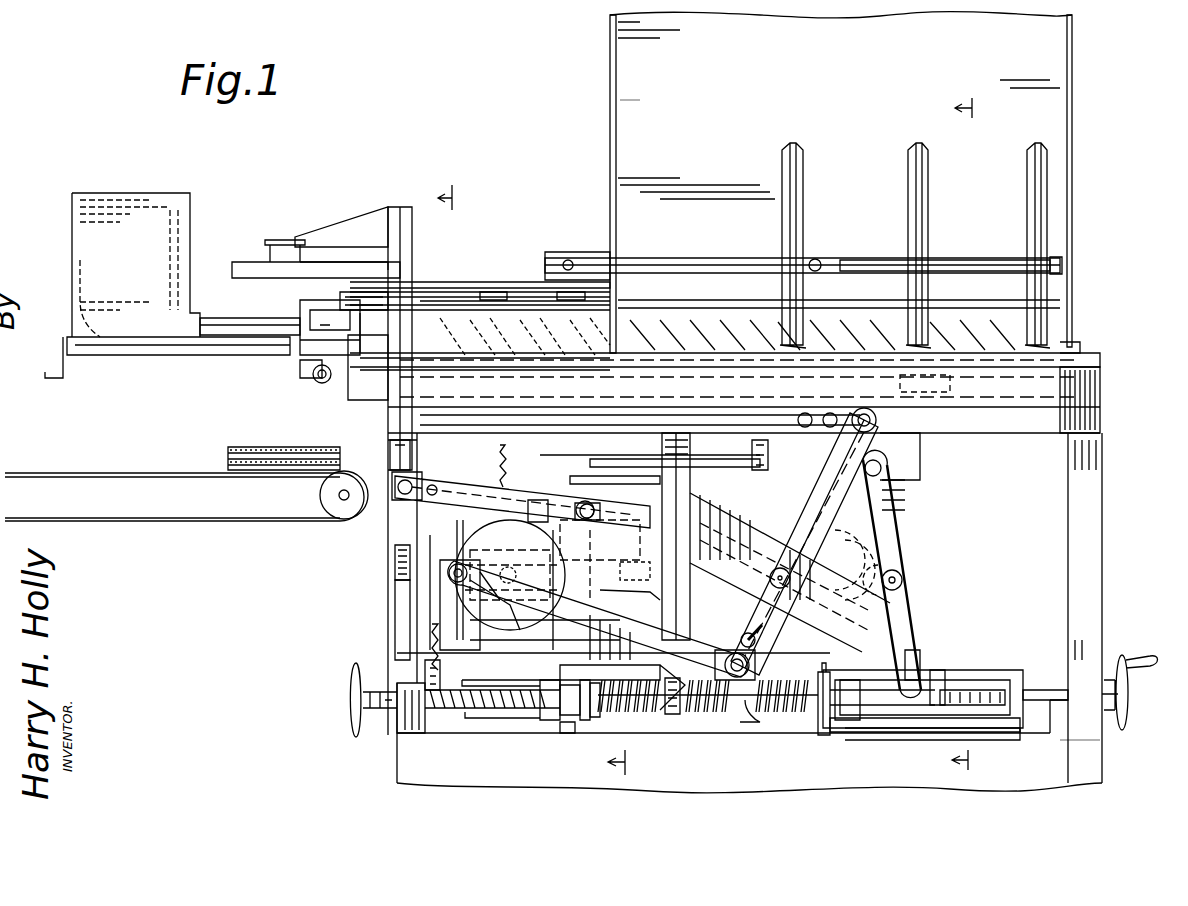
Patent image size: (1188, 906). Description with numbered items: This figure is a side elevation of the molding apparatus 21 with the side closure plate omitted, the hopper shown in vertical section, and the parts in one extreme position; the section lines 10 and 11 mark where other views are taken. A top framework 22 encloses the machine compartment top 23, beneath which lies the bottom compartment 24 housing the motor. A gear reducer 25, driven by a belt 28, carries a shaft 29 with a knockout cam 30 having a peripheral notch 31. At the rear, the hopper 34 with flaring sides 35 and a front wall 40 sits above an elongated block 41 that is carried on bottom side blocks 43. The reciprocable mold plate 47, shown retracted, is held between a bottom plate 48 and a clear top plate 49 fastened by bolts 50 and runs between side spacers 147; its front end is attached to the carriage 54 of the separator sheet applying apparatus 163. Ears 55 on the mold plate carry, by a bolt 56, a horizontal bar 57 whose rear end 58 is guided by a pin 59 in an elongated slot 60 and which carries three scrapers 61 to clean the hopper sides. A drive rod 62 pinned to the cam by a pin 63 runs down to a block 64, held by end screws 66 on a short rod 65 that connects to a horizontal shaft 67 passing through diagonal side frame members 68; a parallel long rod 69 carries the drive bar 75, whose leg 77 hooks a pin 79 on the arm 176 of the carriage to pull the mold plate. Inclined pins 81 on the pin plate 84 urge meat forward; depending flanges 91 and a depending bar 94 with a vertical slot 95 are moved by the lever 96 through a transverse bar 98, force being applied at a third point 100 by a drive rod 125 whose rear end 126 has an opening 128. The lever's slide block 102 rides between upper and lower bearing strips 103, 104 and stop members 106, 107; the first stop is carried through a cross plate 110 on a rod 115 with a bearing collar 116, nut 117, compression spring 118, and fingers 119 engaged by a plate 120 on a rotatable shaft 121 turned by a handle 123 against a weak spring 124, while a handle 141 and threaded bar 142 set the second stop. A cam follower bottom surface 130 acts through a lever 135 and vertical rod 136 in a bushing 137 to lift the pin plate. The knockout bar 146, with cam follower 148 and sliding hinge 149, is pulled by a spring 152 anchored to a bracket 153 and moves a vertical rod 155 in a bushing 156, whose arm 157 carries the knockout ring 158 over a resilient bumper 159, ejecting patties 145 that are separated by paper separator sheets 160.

The section line 10- 10 is at (945, 432).
The section line 11- 11 is at (531, 470).
The molding apparatus 21 is at (760, 406).
The top framework 22 is at (1090, 510).
The machine compartment top 23 is at (1040, 639).
The bottom compartment 24 is at (732, 728).
The gear reducer 25 is at (530, 605).
The belt 28 is at (600, 640).
The shaft 29 is at (493, 555).
The knockout cam 30 is at (585, 545).
The notch 31 is at (528, 598).
The hopper 34 is at (1078, 128).
The hopper sides 35 is at (677, 85).
The front wall 40 is at (612, 72).
The elongated block 41 is at (480, 331).
The bottom side blocks 43 is at (1052, 373).
The mold plate 47 is at (362, 295).
The bottom plate 48 is at (618, 312).
The top plate 49 is at (430, 310).
The bolts 50 is at (493, 292).
The carriage 54 is at (240, 360).
The ears 55 is at (572, 260).
The bolt 56 is at (570, 256).
The horizontal bar 57 is at (688, 258).
The rear end 58 is at (1062, 262).
The pin 59 is at (817, 258).
The elongated slot 60 is at (960, 260).
The scrapers 61 is at (796, 190).
The drive rod 62 is at (615, 600).
The pin 63 is at (457, 565).
The block 64 is at (752, 650).
The short rod 65 is at (758, 619).
The end screws 66 is at (744, 635).
The horizontal shaft 67 is at (772, 575).
The side frame members 68 is at (735, 500).
The long rod 69 is at (812, 510).
The drive bar 75 is at (640, 413).
The leg 77 is at (318, 383).
The pin 79 is at (322, 330).
The pins 81 is at (695, 320).
The pin plate 84 is at (955, 382).
The depending flanges 91 is at (880, 420).
The depending metal bar 94 is at (888, 466).
The vertical slot 95 is at (890, 425).
The lever 96 is at (895, 548).
The transverse bar 98 is at (900, 502).
The third point 100 is at (905, 585).
The slide block 102 is at (925, 668).
The upper bearing strip 103 is at (995, 675).
The lower bearing strip 104 is at (990, 712).
The first stop member 106 is at (875, 730).
The second stop member 107 is at (945, 678).
The cross plate 110 is at (820, 672).
The rod 115 is at (655, 715).
The bearing collar 116 is at (596, 722).
The nut 117 is at (585, 722).
The compression spring 118 is at (648, 680).
The fingers 119 is at (463, 682).
The plate 120 is at (565, 715).
The rotatable shaft 121 is at (520, 710).
The handle 123 is at (355, 696).
The weak spring 124 is at (397, 735).
The drive rod 125 is at (640, 560).
The rear end 126 is at (910, 580).
The opening 128 is at (830, 545).
The bottom surface 130 is at (468, 482).
The lever 135 is at (615, 457).
The vertical rod 136 is at (698, 536).
The bushing 137 is at (770, 450).
The handle 141 is at (1130, 696).
The threaded rotatable bar 142 is at (1062, 680).
The patty 145 is at (228, 450).
The bar 146 is at (537, 498).
The side spacers 147 is at (515, 290).
The cam follower 148 is at (585, 488).
The sliding hinge 149 is at (594, 506).
The spring 152 is at (435, 630).
The bracket 153 is at (454, 670).
The vertical rod 155 is at (412, 290).
The bushing 156 is at (390, 428).
The arm 157 is at (350, 225).
The knockout ring 158 is at (240, 262).
The resilient bumper 159 is at (396, 565).
The paper separator sheet 160 is at (228, 468).
The separator sheet applying apparatus 163 is at (63, 247).
The arm 176 is at (290, 318).